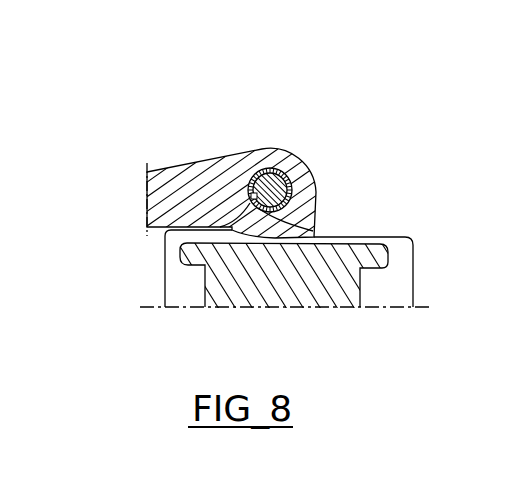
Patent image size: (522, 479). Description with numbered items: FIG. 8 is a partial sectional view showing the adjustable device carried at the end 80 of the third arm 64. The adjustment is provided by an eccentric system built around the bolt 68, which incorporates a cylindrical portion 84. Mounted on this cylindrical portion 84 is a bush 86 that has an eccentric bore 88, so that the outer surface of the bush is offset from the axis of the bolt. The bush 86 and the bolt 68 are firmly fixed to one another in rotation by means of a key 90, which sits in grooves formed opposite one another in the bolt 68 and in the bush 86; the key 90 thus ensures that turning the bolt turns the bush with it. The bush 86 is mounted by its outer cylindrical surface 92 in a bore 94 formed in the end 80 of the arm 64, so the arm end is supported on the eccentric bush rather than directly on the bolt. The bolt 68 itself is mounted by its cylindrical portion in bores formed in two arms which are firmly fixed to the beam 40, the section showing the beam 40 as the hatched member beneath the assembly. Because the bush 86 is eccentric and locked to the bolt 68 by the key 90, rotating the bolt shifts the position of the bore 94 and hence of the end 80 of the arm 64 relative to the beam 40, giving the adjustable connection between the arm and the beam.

The beam 40 is at (322, 290).
The third arm 64 is at (160, 172).
The bolt 68 is at (296, 172).
The end 80 is at (217, 165).
The cylindrical portion 84 is at (282, 169).
The bush 86 is at (255, 216).
The eccentric bore 88 is at (290, 238).
The key 90 is at (252, 198).
The outer cylindrical surface 92 is at (314, 190).
The bore 94 is at (314, 206).